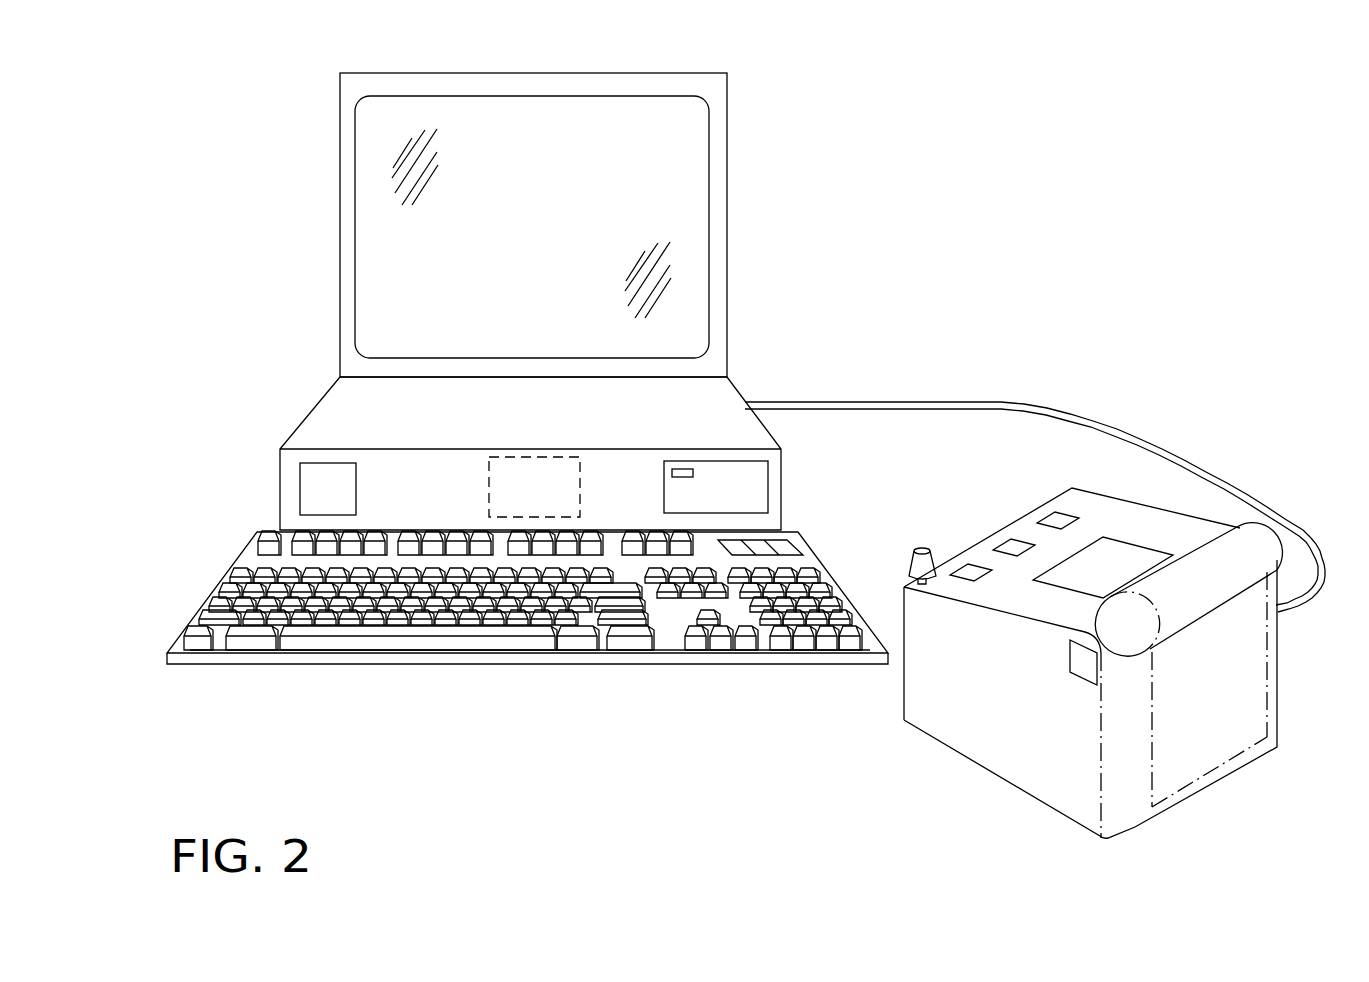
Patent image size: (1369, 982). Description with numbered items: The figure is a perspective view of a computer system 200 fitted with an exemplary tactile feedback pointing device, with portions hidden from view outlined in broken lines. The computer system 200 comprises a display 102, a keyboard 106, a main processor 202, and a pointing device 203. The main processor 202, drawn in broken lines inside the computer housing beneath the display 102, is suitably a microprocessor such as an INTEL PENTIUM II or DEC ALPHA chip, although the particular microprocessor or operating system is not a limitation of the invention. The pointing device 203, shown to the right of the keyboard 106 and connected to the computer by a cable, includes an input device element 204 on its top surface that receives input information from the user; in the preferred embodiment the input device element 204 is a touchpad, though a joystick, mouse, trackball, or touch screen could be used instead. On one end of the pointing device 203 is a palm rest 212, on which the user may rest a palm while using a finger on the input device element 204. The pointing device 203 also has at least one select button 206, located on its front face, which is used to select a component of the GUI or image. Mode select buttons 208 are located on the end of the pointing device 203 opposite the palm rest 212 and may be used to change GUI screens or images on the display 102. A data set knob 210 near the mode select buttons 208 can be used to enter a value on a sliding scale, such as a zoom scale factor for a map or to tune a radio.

The computer system 200 is at (278, 93).
The display 102 is at (552, 80).
The keyboard 106 is at (488, 660).
The main processor 202 is at (489, 478).
The pointing device 203 is at (998, 782).
The input device element 204 is at (1152, 545).
The select button 206 is at (1082, 686).
The mode select buttons 208 is at (963, 562).
The data set knob 210 is at (912, 570).
The palm rest 212 is at (1263, 527).